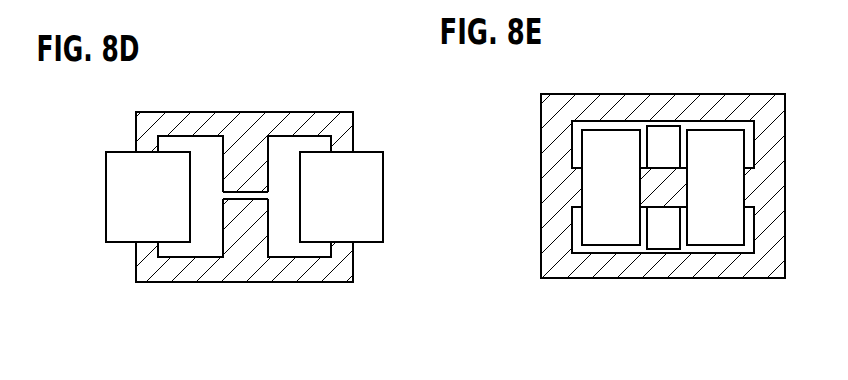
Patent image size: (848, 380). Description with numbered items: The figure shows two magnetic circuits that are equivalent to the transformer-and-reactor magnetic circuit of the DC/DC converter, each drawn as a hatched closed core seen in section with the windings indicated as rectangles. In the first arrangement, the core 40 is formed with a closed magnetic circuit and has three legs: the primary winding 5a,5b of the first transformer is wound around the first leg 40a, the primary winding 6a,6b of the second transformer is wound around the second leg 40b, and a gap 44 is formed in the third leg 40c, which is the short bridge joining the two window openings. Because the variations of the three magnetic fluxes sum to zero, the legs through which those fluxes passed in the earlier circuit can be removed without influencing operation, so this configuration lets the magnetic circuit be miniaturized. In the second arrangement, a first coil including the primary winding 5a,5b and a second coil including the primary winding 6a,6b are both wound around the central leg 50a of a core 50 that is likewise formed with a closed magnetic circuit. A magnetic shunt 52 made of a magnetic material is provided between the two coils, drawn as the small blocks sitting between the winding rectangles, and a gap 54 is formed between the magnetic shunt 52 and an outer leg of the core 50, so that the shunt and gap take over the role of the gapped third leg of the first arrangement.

In FIG. 8D, the core 40 is at (245, 111).
In FIG. 8D, the first leg 40a is at (136, 249).
In FIG. 8D, the second leg 40b is at (353, 248).
In FIG. 8D, the third leg 40c is at (267, 240).
In FIG. 8D, the gap 44 is at (268, 196).
In FIG. 8D, the primary winding of transformer T1 5a,5b is at (106, 200).
In FIG. 8E, the primary winding of transformer T1 5a,5b is at (600, 255).
In FIG. 8D, the primary winding of transformer T2 6a,6b is at (383, 193).
In FIG. 8E, the primary winding of transformer T2 6a,6b is at (735, 246).
In FIG. 8E, the core 50 is at (584, 93).
In FIG. 8E, the central leg 50a is at (645, 212).
In FIG. 8E, the magnetic shunt 52 is at (668, 135).
In FIG. 8E, the gap 54 is at (677, 198).